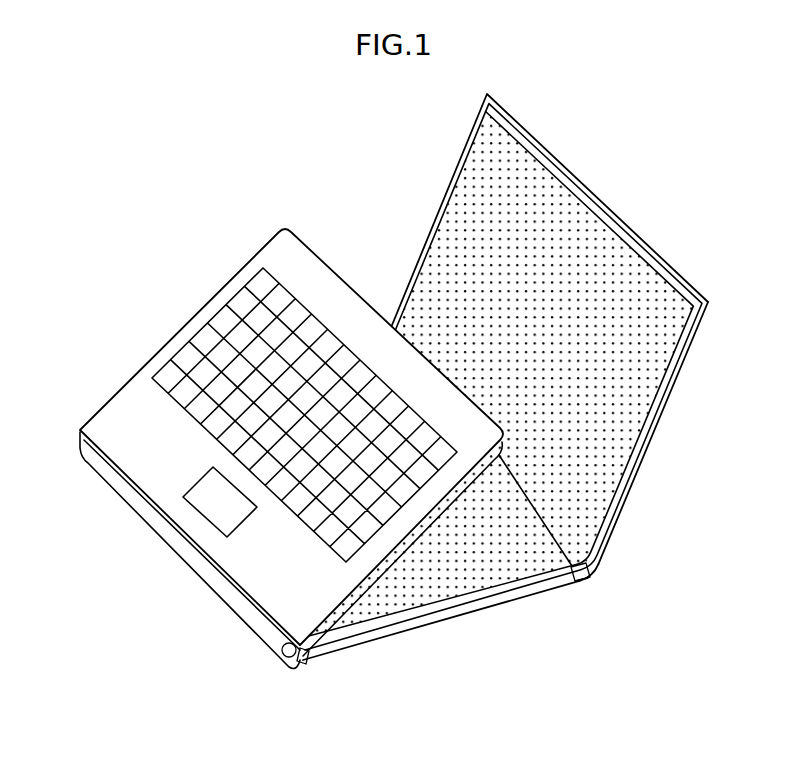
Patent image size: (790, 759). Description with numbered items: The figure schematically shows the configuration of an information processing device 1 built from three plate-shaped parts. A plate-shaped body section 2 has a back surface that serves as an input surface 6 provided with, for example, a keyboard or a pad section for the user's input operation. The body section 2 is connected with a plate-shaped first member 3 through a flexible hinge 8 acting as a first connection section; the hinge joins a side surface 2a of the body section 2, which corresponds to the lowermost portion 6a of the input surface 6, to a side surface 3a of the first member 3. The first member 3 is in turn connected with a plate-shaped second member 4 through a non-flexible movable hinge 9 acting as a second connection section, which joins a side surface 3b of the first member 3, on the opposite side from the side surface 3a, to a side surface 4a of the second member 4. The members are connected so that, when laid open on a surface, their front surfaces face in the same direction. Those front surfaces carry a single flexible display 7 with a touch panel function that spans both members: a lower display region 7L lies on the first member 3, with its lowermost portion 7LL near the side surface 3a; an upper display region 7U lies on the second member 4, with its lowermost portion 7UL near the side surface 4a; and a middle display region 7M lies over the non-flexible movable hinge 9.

The information processing device 1 is at (387, 407).
The plate-shaped body section 2 is at (264, 448).
The side surface of the body section 2a is at (85, 443).
The first member 3 is at (474, 615).
The side surface of the first member 3a is at (304, 668).
The side surface of the first member 3b is at (580, 582).
The second member 4 is at (689, 366).
The side surface of the second member 4a is at (597, 564).
The input surface 6 is at (210, 343).
The lowermost portion of the input surface 6a is at (146, 458).
The flexible display 7 is at (515, 407).
The upper display region 7U is at (607, 393).
The middle display region 7M is at (523, 507).
The lower display region 7L is at (457, 565).
The lowermost portion of the upper display region 7UL is at (513, 470).
The lowermost portion of the lower display region 7LL is at (312, 661).
The flexible hinge 8 is at (185, 548).
The non-flexible movable hinge 9 is at (585, 578).